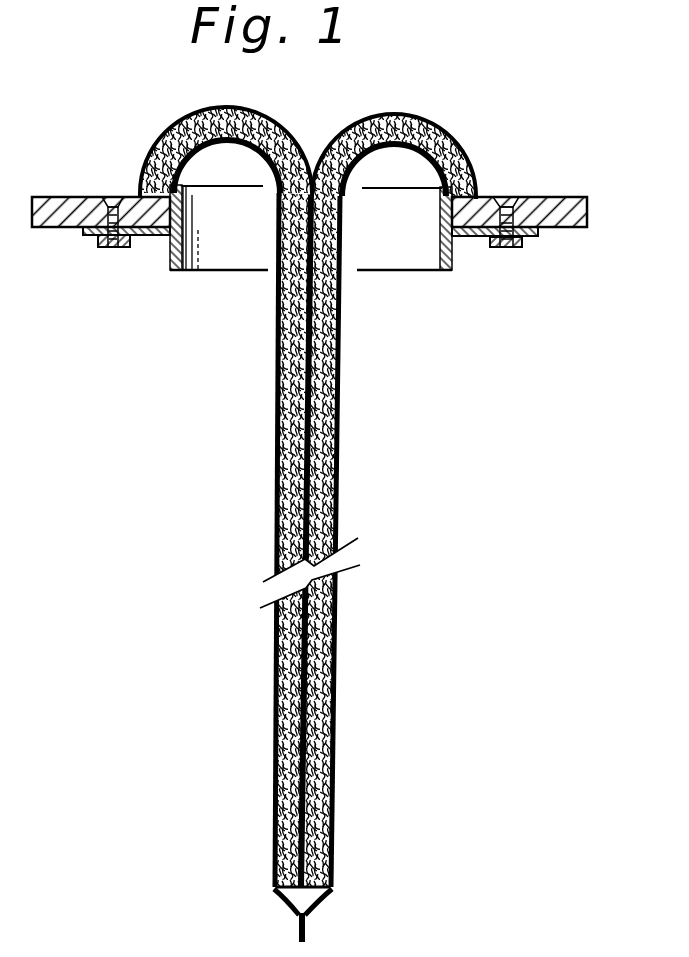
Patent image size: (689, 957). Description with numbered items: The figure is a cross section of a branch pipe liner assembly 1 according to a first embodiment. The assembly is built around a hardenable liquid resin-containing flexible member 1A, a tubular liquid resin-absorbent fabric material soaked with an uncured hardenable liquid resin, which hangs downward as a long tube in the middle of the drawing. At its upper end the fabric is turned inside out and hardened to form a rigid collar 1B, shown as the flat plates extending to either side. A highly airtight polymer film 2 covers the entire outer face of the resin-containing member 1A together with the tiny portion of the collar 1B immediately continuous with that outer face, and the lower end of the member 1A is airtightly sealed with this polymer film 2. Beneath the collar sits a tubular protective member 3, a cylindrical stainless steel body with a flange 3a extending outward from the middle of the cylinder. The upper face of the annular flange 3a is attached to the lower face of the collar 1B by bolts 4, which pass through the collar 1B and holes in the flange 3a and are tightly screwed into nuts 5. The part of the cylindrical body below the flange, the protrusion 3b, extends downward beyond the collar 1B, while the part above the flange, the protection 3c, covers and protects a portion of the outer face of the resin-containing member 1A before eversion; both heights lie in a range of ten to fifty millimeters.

The branch pipe liner assembly 1 is at (311, 491).
The hardenable liquid resin-containing flexible member 1A is at (303, 567).
The rigid collar 1B is at (558, 198).
The highly airtight polymer film 2 is at (275, 468).
The tubular protective member 3 is at (340, 250).
The flange 3a is at (537, 237).
The protrusion 3b is at (170, 267).
The protection 3c is at (192, 200).
The bolts 4 is at (112, 197).
The nuts 5 is at (100, 247).